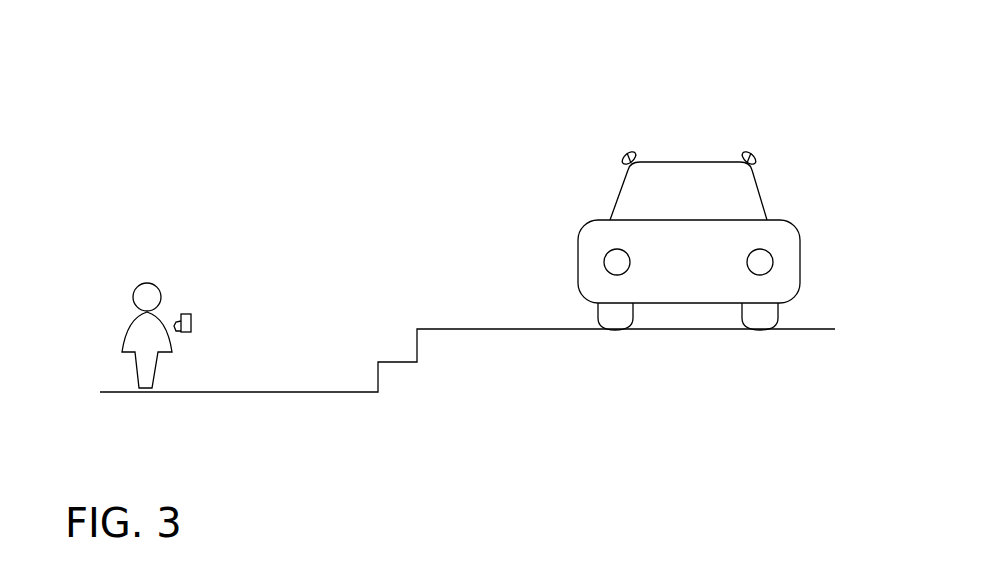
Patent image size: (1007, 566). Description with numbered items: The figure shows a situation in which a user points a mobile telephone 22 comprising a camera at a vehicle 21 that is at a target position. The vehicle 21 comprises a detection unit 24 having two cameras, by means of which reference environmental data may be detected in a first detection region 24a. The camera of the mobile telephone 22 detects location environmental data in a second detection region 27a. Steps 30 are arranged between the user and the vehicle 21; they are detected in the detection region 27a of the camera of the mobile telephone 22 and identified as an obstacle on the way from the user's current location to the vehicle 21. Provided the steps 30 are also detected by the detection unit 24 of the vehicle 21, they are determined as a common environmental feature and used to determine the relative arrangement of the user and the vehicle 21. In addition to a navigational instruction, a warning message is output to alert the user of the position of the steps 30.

The vehicle 21 is at (690, 146).
The mobile telephone 22 is at (180, 302).
The detection unit 24 is at (625, 146).
The first detection region 24a is at (415, 147).
The second detection region 27a is at (312, 268).
The steps 30 is at (425, 380).